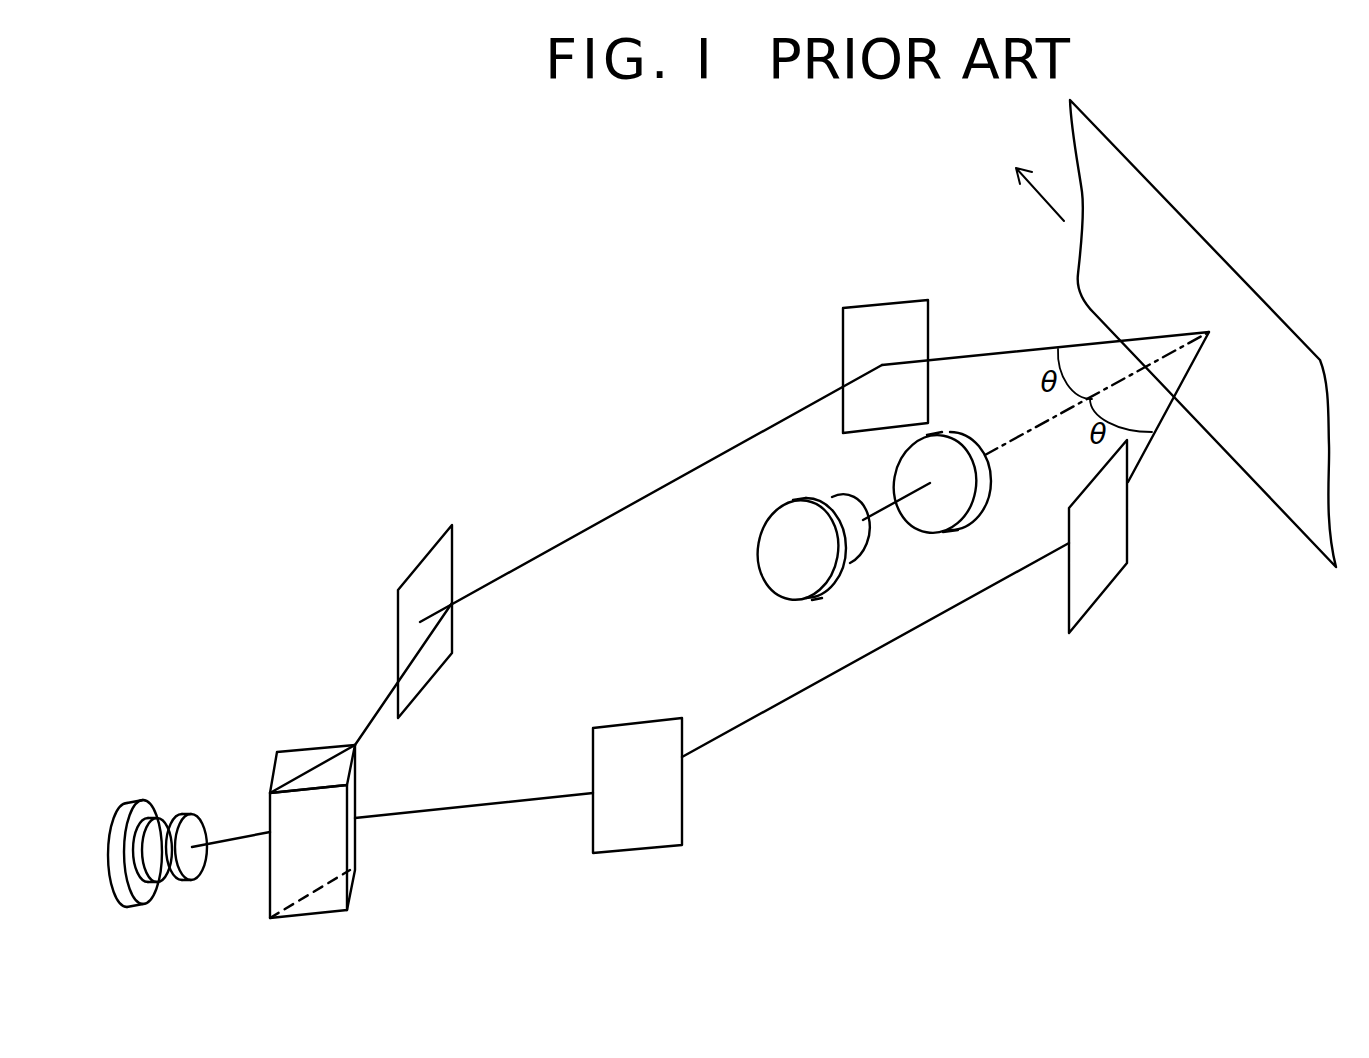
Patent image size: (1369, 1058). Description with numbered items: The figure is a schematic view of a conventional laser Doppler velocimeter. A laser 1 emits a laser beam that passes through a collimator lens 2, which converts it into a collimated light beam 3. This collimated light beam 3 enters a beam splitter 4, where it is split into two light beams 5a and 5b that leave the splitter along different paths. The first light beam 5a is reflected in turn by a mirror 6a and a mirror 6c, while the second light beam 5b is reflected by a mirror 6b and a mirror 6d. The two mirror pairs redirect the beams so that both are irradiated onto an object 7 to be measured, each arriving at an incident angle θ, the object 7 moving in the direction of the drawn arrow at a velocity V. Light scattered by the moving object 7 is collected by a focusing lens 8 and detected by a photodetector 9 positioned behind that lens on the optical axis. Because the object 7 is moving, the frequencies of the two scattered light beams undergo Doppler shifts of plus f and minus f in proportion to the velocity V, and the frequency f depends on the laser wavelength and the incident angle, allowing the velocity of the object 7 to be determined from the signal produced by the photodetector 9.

The laser 1 is at (128, 807).
The collimator lens 2 is at (198, 882).
The collimated light beam 3 is at (233, 847).
The beam splitter 4 is at (288, 762).
The light beam 5a is at (375, 703).
The light beam 5b is at (477, 810).
The mirror 6a is at (408, 578).
The mirror 6b is at (658, 830).
The mirror 6c is at (857, 322).
The mirror 6d is at (1095, 572).
The object to be measured 7 is at (1218, 285).
The focusing lens 8 is at (943, 512).
The photodetector 9 is at (783, 548).